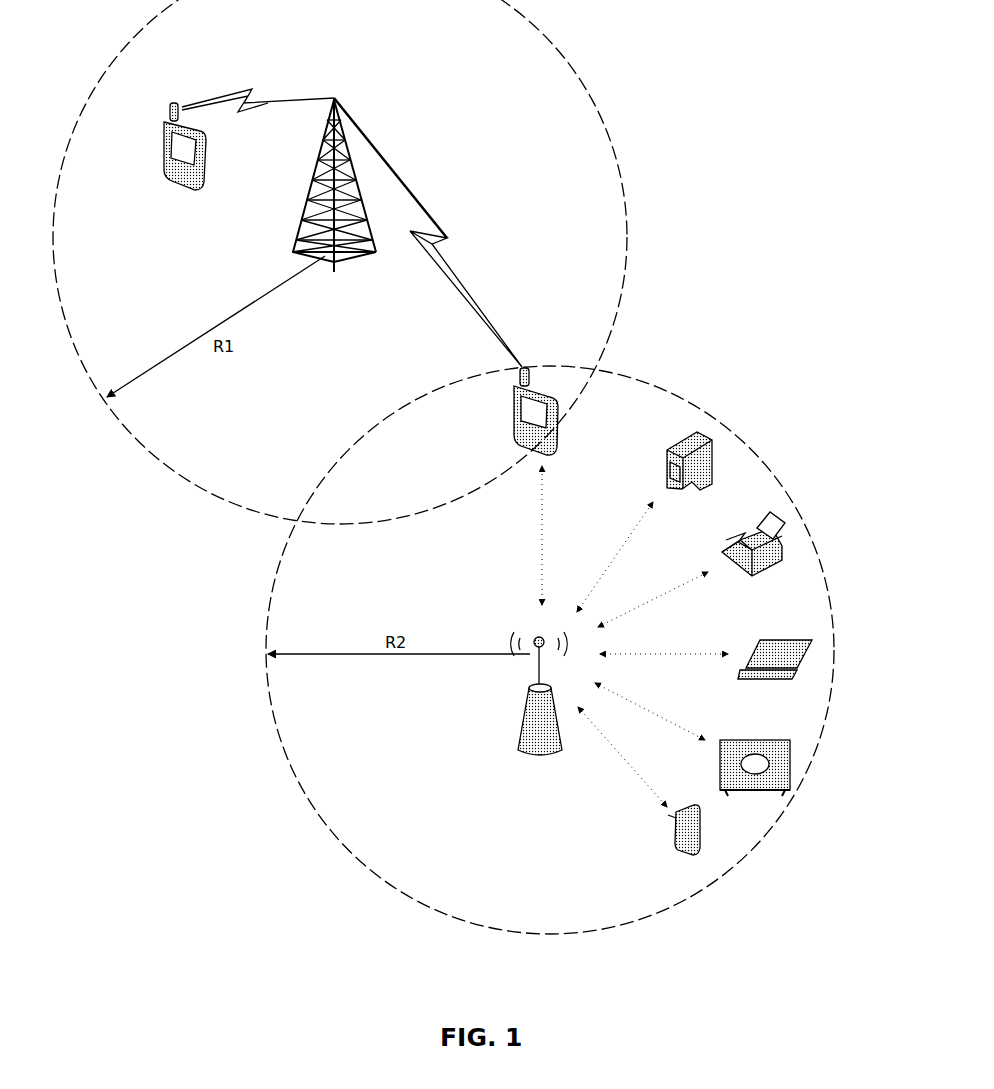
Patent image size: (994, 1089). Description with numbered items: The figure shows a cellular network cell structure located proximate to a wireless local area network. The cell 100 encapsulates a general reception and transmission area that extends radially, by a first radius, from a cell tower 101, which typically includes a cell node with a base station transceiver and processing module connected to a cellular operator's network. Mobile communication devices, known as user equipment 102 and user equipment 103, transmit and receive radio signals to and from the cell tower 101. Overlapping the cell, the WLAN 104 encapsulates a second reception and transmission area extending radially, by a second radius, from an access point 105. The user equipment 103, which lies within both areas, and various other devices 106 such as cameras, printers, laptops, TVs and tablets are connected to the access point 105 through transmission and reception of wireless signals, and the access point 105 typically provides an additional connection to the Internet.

The cell 100 is at (176, 470).
The cell tower 101 is at (297, 250).
The user equipment 102 is at (165, 125).
The user equipment 103 is at (514, 393).
The WLAN 104 is at (290, 772).
The access point 105 is at (522, 725).
The other devices 106 is at (707, 435).